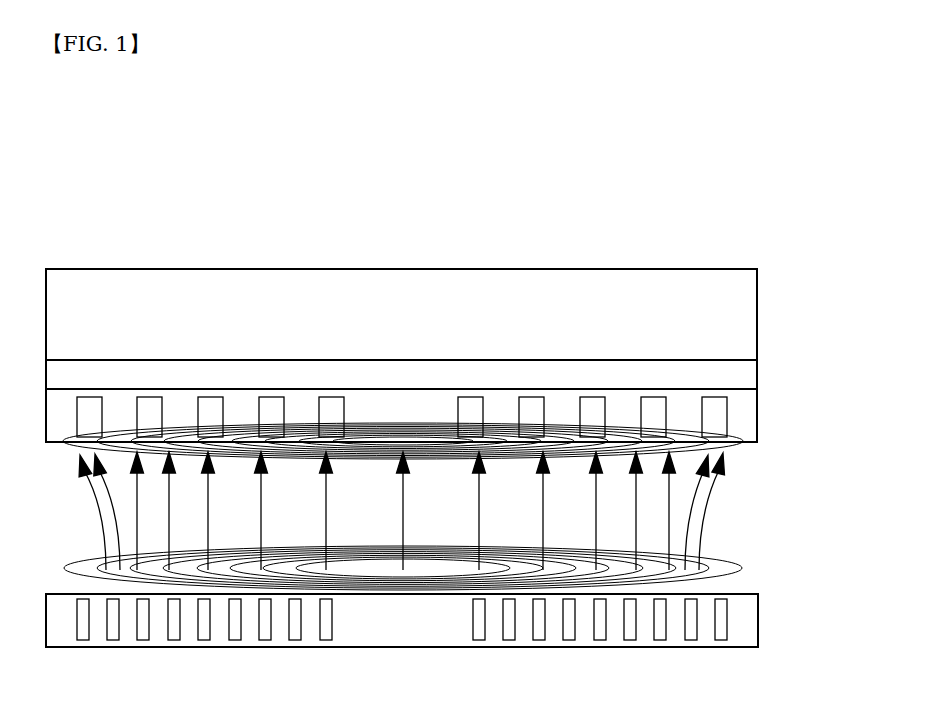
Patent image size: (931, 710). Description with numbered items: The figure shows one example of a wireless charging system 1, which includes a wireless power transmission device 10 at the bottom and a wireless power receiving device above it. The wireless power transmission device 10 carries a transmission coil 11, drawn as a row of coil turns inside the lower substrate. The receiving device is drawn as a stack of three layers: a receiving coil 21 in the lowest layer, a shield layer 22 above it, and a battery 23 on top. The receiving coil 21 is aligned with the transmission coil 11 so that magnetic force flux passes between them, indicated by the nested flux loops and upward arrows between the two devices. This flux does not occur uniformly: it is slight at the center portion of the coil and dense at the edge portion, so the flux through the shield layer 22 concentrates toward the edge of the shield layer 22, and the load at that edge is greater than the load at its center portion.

The wireless charging system 1 is at (624, 200).
The wireless power transmission device 10 is at (430, 643).
The transmission coil 11 is at (719, 641).
The receiving coil 21 is at (727, 413).
The shield layer 22 is at (758, 374).
The battery 23 is at (758, 312).